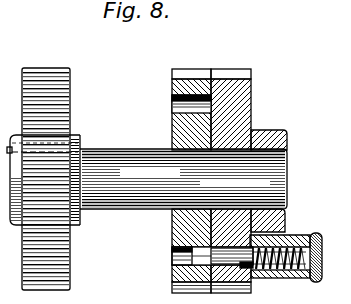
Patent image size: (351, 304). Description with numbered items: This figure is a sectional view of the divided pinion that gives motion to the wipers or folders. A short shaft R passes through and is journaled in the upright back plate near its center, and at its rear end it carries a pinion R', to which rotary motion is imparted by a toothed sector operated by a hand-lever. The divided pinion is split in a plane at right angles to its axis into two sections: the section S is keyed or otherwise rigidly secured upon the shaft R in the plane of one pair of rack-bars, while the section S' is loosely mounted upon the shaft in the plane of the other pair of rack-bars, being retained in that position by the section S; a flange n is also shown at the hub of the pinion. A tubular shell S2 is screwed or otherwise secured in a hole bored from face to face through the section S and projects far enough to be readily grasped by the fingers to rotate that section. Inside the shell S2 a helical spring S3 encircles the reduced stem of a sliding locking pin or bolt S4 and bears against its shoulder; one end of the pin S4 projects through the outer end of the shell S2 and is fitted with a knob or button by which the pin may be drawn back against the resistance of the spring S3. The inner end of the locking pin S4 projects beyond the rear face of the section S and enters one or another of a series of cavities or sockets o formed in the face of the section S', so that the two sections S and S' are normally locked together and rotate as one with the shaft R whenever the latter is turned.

The pinion R' is at (43, 168).
The short shaft R is at (194, 179).
The pinion section S' is at (191, 170).
The pinion section S is at (231, 170).
The flange n is at (276, 177).
The cavities or sockets o is at (173, 108).
The tubular shell S2 is at (286, 267).
The helical spring S3 is at (291, 243).
The sliding locking pin or bolt S4 is at (247, 275).